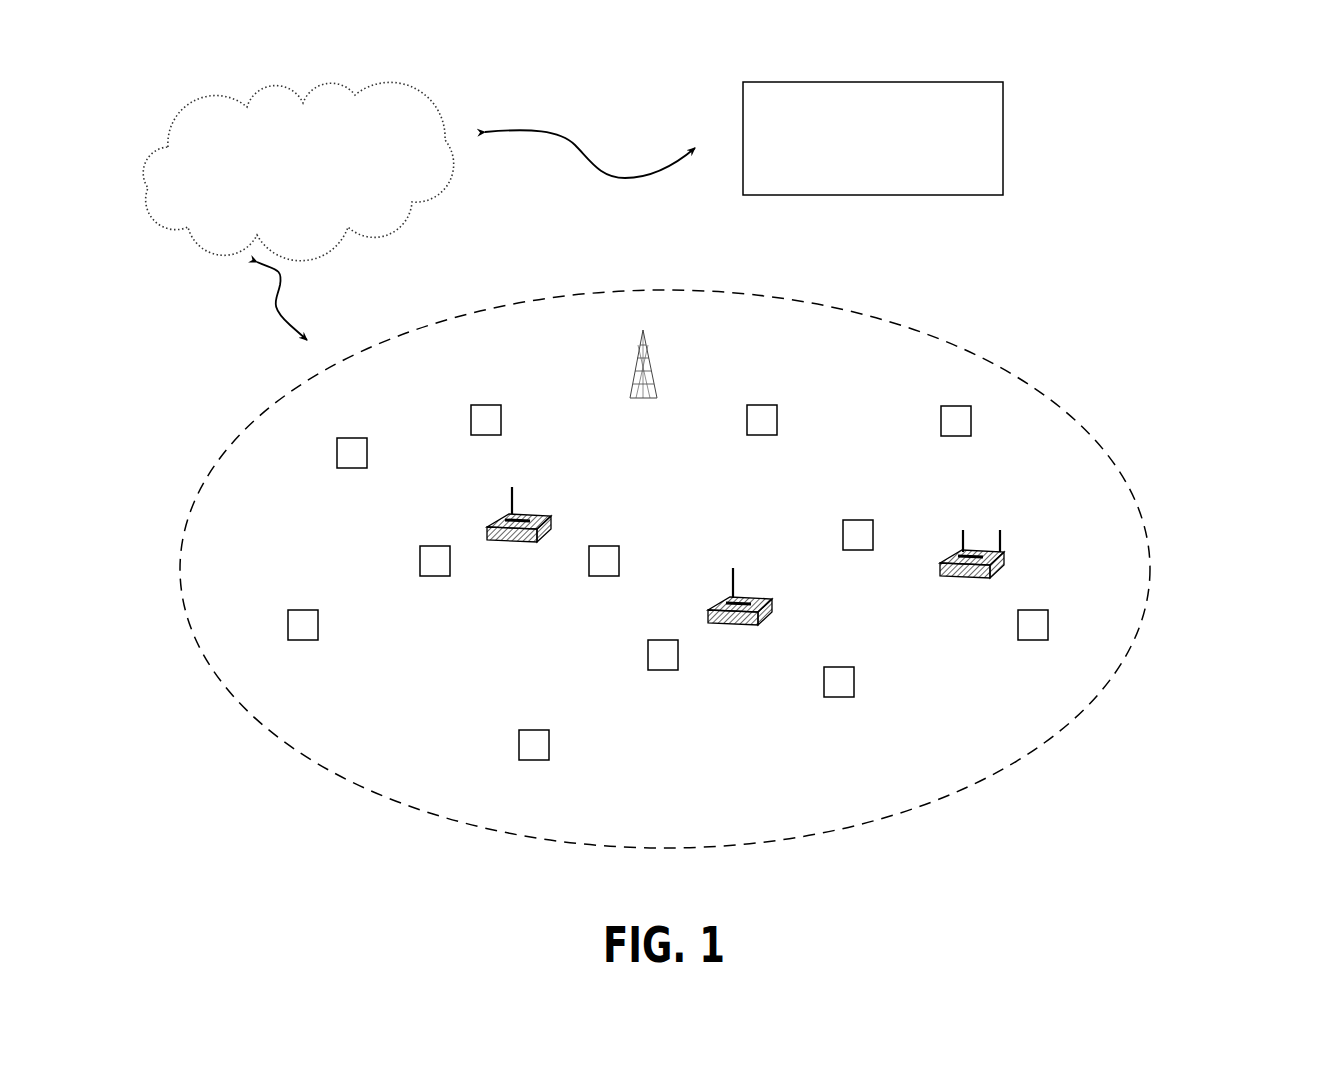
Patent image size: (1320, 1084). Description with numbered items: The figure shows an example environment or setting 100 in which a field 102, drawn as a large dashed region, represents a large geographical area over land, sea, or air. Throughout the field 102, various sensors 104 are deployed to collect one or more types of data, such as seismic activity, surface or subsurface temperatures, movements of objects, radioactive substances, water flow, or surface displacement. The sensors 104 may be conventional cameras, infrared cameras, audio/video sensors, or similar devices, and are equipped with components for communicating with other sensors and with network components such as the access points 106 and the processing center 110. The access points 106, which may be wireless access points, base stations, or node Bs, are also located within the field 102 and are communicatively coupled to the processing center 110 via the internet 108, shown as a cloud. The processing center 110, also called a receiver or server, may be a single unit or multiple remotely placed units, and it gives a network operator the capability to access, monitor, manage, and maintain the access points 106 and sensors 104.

The environment or setting 100 is at (1168, 115).
The field 102 is at (292, 748).
The sensors 104 is at (338, 470).
The access points 106 is at (630, 390).
The internet 108 is at (190, 240).
The processing center 110 is at (938, 196).